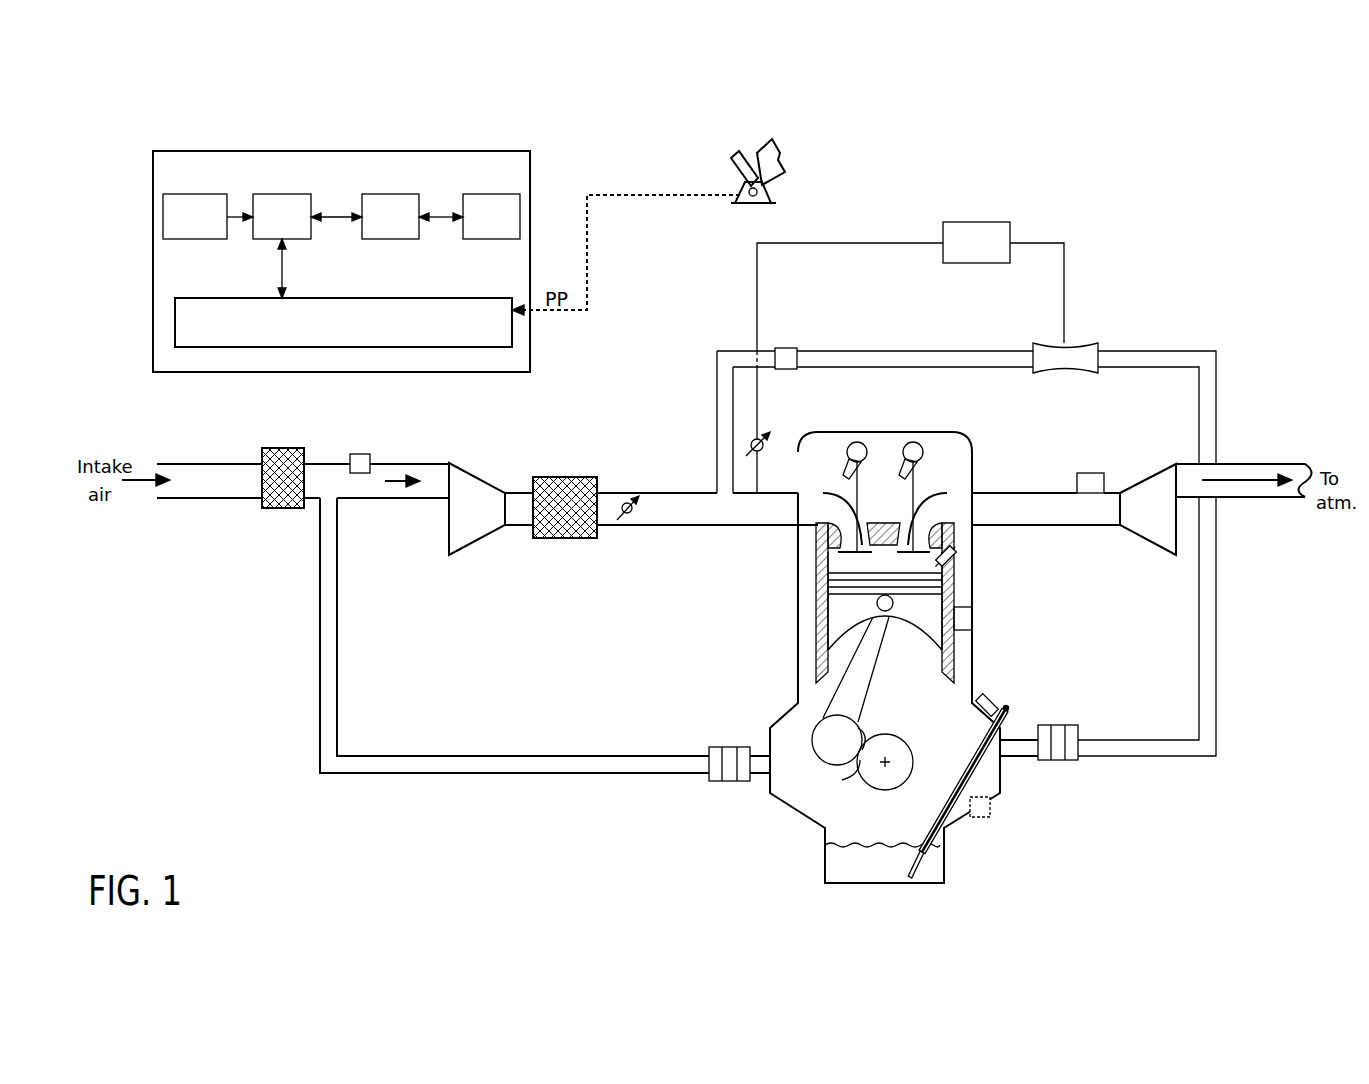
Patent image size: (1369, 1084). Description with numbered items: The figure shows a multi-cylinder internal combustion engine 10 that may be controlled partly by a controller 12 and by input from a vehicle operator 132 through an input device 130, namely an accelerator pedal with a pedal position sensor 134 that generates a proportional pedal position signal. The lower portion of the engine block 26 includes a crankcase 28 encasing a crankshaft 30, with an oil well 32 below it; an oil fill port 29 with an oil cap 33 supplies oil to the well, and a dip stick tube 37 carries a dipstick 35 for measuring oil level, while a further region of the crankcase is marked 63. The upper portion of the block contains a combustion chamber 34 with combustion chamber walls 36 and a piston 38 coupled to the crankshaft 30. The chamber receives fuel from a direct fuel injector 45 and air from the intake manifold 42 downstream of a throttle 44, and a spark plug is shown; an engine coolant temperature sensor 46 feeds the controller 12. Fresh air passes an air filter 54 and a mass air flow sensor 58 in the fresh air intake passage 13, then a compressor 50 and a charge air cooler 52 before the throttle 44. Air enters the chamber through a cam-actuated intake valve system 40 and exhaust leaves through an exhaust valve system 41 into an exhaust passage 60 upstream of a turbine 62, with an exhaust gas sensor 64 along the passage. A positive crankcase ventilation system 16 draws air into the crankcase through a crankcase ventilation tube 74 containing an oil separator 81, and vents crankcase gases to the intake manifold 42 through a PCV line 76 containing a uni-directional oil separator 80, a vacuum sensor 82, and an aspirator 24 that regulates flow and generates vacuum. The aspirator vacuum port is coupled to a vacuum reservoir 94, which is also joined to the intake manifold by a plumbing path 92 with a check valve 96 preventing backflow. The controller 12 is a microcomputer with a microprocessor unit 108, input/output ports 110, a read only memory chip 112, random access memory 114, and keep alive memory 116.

The engine 10 is at (1217, 170).
The controller 12 is at (505, 151).
The fresh air intake passage 13 is at (347, 500).
The positive crankcase ventilation system 16 is at (1163, 293).
The aspirator 24 is at (1078, 375).
The engine block 26 is at (1006, 858).
The crankcase 28 is at (1000, 794).
The oil fill port 29 is at (975, 700).
The crankshaft 30 is at (838, 742).
The oil well 32 is at (883, 866).
The oil cap 33 is at (990, 700).
The combustion chamber 34 is at (835, 556).
The dipstick 35 is at (1005, 712).
The combustion chamber walls 36 is at (950, 590).
The dip stick tube 37 is at (975, 755).
The piston 38 is at (840, 605).
The intake valve system 40 is at (860, 493).
The exhaust valve system 41 is at (928, 482).
The intake manifold 42 is at (748, 527).
The throttle 44 is at (630, 518).
The fuel injector 45 is at (955, 550).
The engine coolant temperature sensor 46 is at (960, 622).
The compressor 50 is at (477, 509).
The charge air cooler 52 is at (560, 477).
The air filter 54 is at (280, 448).
The mass air flow sensor 58 is at (362, 454).
The exhaust passage 60 is at (1003, 492).
The turbine 62 is at (1148, 509).
The crankcase 63 is at (982, 818).
The exhaust gas sensor 64 is at (1104, 478).
The crankcase ventilation tube 74 is at (585, 774).
The PCV line 76 is at (893, 372).
The uni-directional oil separator 80 is at (1052, 725).
The oil separator 81 is at (722, 746).
The vacuum sensor 82 is at (784, 372).
The plumbing path 92 is at (756, 292).
The vacuum reservoir 94 is at (976, 242).
The check valve 96 is at (763, 440).
The microprocessor unit 108 is at (285, 193).
The input/output ports 110 is at (345, 298).
The read only memory chip 112 is at (195, 193).
The random access memory 114 is at (388, 193).
The keep alive memory 116 is at (493, 193).
The input device 130 is at (782, 155).
The vehicle operator 132 is at (735, 167).
The pedal position sensor 134 is at (766, 192).